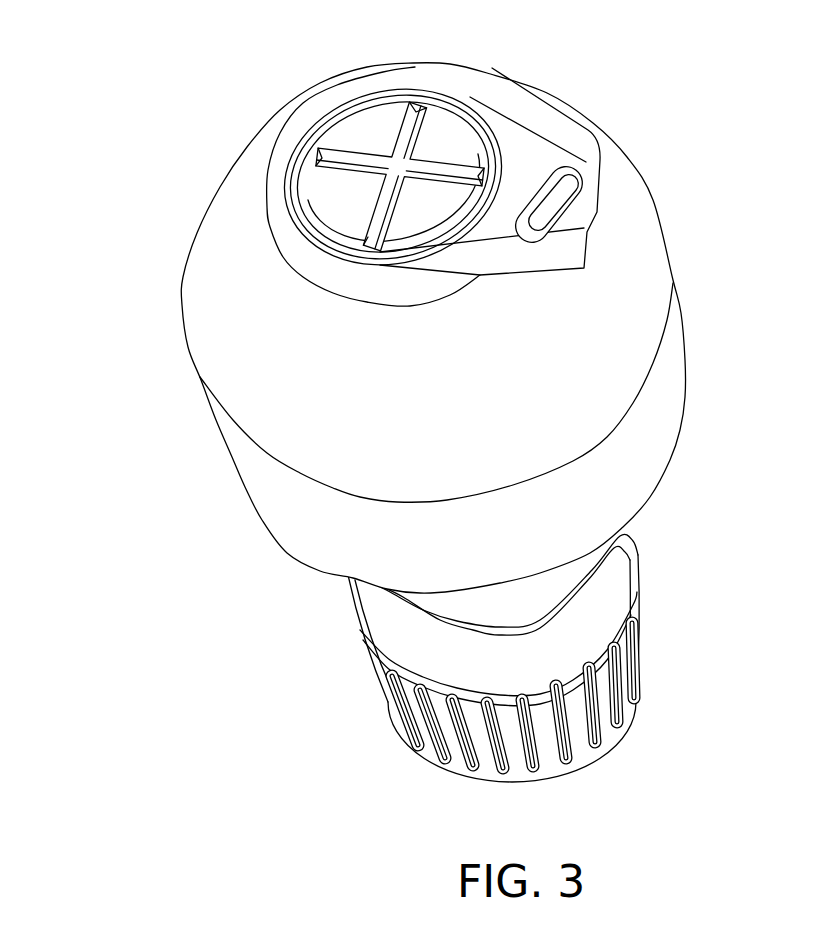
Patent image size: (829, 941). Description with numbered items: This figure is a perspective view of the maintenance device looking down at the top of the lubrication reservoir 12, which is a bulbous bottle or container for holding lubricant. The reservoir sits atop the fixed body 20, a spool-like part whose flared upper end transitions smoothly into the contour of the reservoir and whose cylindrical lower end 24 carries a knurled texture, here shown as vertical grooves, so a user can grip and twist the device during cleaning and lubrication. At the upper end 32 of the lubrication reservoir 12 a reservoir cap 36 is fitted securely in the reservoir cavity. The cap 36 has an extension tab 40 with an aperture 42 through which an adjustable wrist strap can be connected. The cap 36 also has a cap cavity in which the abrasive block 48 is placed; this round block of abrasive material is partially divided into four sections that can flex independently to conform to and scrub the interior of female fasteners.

The lubrication reservoir 12 is at (236, 168).
The fixed body 20 is at (353, 603).
The cylindrical lower end 24 is at (417, 727).
The upper end 32 is at (207, 337).
The reservoir cap 36 is at (468, 108).
The extension tab 40 is at (553, 147).
The aperture 42 is at (585, 205).
The abrasive block 48 is at (365, 118).